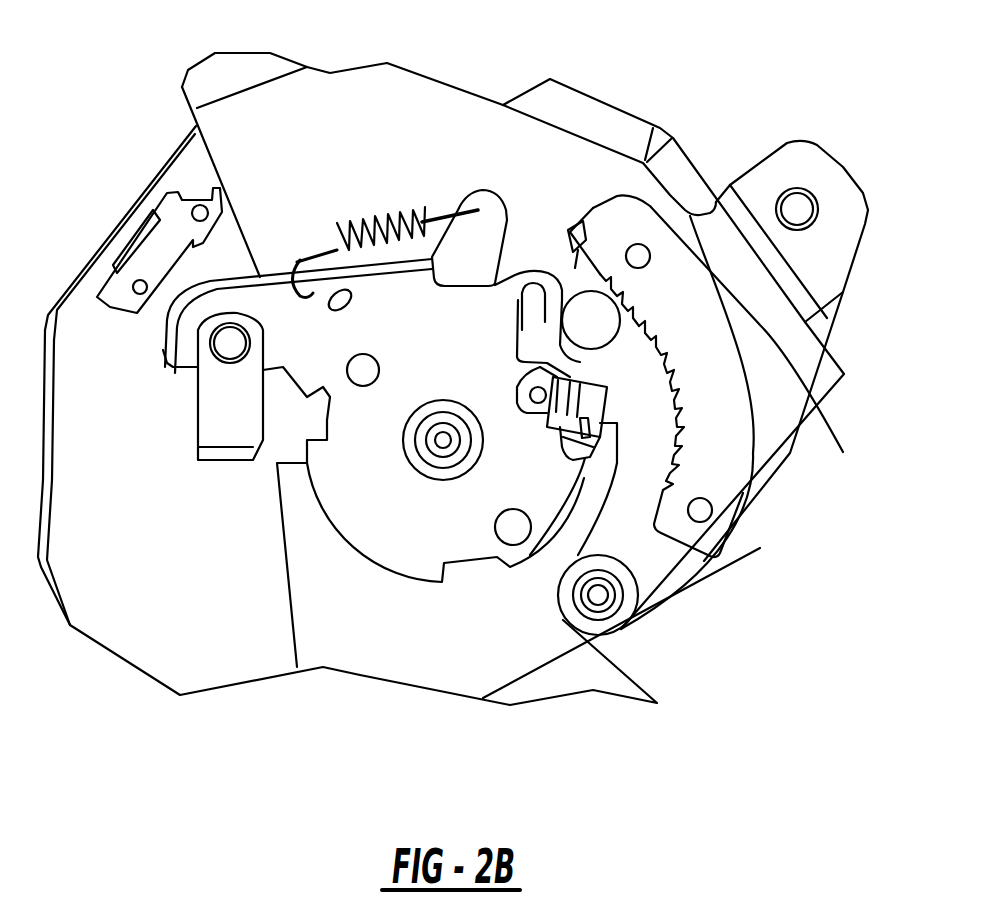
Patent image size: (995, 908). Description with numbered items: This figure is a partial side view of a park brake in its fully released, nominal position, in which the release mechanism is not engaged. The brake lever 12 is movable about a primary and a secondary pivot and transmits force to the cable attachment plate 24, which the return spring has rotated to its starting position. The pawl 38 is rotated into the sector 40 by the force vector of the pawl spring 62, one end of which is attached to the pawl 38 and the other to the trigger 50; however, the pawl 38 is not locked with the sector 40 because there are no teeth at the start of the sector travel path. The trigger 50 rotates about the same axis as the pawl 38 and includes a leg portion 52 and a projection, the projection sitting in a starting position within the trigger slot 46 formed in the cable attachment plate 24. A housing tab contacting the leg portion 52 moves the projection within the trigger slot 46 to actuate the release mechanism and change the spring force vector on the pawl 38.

The brake lever 12 is at (636, 660).
The cable attachment plate 24 is at (367, 462).
The pawl 38 is at (586, 228).
The sector 40 is at (717, 375).
The trigger slot 46 is at (537, 297).
The trigger 50 is at (607, 356).
The leg portion 52 is at (600, 365).
The pawl spring 62 is at (593, 447).